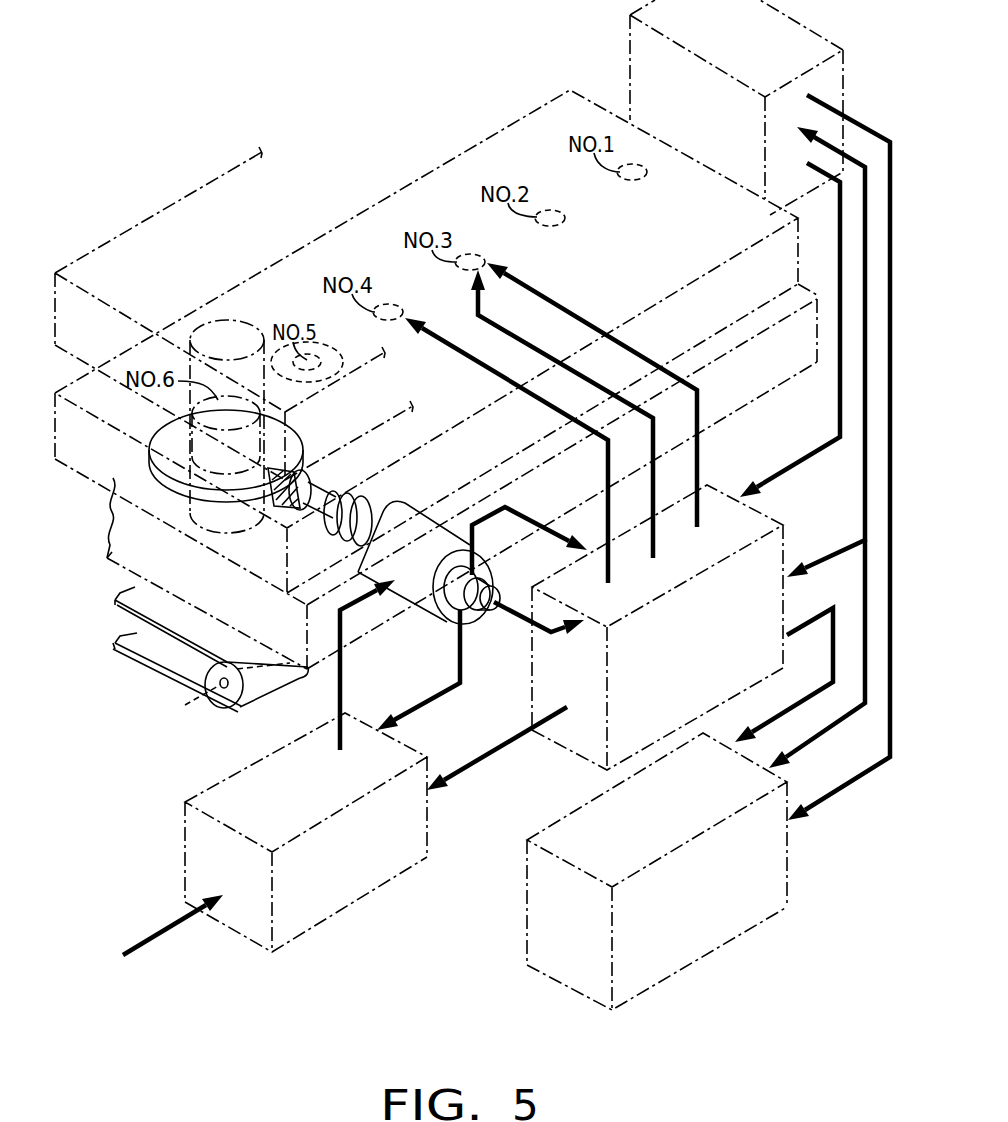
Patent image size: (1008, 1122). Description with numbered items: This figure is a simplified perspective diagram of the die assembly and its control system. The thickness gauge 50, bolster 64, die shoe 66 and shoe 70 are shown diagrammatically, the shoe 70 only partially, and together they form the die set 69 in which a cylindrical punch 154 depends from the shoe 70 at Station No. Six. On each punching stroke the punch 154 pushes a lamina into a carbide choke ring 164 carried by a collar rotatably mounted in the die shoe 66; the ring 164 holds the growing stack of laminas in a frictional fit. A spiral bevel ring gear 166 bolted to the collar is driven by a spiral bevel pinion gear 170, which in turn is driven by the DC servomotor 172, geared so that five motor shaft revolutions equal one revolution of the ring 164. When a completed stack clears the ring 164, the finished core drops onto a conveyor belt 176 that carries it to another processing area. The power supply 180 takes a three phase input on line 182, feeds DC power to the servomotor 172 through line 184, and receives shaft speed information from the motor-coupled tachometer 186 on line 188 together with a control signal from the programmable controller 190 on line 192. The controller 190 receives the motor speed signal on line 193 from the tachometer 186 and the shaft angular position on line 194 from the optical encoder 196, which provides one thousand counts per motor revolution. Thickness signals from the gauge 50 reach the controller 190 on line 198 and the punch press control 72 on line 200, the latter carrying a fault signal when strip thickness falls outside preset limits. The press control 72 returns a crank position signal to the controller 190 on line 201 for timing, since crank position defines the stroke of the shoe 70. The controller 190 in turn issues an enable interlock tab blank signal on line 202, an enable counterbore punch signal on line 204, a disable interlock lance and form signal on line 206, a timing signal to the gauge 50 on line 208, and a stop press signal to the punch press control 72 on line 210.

The thickness gauge 50 is at (845, 77).
The die set 69 is at (104, 228).
The shoe 70 is at (102, 337).
The die shoe 66 is at (104, 464).
The bolster 64 is at (213, 589).
The cylindrical punch 154 is at (213, 322).
The choke ring 164 is at (107, 490).
The spiral bevel ring gear 166 is at (107, 557).
The spiral bevel pinion gear 170 is at (330, 466).
The servomotor 172 is at (403, 496).
The conveyor belt 176 is at (150, 662).
The power supply 180 is at (375, 892).
The line 182 is at (125, 950).
The line 184 is at (335, 700).
The tachometer 186 is at (455, 594).
The line 188 is at (432, 700).
The programmable controller 190 is at (560, 747).
The line 192 is at (478, 760).
The line 193 is at (533, 512).
The line 194 is at (522, 620).
The optical encoder 196 is at (495, 610).
The line 198 is at (783, 468).
The line 200 is at (873, 772).
The line 201 is at (821, 730).
The line 202 is at (575, 314).
The line 204 is at (606, 394).
The line 206 is at (533, 397).
The line 208 is at (818, 555).
The line 210 is at (805, 695).
The punch press control 72 is at (788, 885).